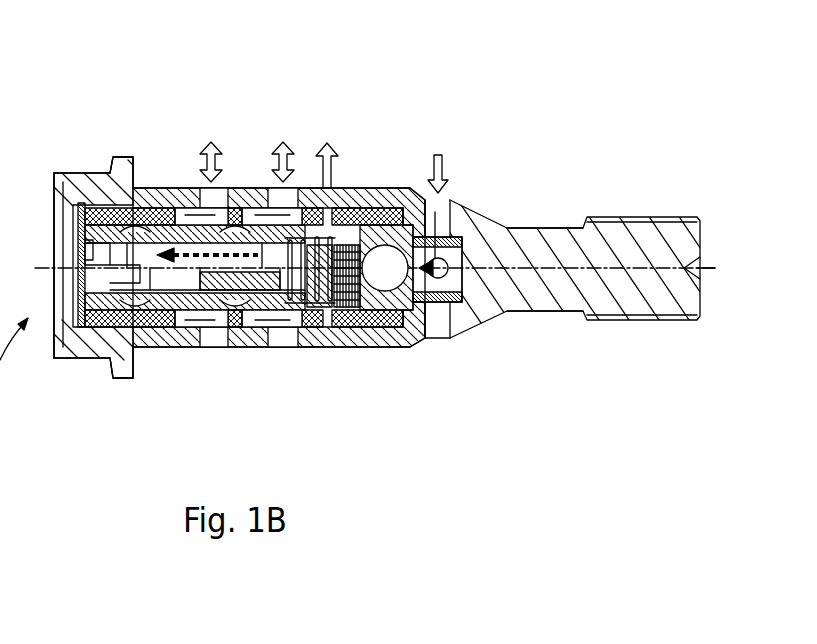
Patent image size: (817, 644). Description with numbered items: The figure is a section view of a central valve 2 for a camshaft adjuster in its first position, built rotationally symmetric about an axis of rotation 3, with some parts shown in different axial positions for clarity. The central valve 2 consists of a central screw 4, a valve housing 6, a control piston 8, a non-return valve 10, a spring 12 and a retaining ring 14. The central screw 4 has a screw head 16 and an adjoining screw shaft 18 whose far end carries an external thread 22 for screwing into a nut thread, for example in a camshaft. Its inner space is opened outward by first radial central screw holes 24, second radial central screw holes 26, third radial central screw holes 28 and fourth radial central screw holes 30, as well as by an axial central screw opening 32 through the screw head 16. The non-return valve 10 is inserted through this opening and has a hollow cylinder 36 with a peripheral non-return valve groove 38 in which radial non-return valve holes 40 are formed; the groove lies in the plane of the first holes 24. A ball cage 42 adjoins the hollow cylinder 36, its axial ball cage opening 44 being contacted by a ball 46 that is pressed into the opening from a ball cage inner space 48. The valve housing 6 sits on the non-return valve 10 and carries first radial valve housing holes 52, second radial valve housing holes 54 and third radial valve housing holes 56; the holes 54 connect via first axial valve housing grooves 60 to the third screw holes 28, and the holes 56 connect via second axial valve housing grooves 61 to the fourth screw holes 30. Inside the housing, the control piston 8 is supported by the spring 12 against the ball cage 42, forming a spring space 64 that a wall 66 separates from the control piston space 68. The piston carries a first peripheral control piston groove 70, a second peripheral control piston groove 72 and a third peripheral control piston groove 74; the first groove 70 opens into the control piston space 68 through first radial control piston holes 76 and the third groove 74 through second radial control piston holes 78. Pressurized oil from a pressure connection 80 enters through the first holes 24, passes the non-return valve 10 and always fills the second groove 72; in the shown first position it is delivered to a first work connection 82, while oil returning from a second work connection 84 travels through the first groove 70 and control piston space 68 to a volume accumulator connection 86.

The central valve 2 is at (657, 53).
The axis of rotation 3 is at (713, 268).
The central screw 4 is at (400, 347).
The valve housing 6 is at (128, 372).
The control piston 8 is at (245, 335).
The non-return valve 10 is at (397, 213).
The spring 12 is at (372, 298).
The retaining ring 14 is at (72, 186).
The screw head 16 is at (117, 158).
The screw shaft 18 is at (365, 205).
The external thread 22 is at (642, 217).
The first radial central screw holes 24 is at (455, 205).
The second radial central screw holes 26 is at (345, 222).
The third radial central screw holes 28 is at (278, 240).
The fourth radial central screw holes 30 is at (205, 222).
The axial central screw opening 32 is at (58, 250).
The hollow cylinder 36 is at (455, 237).
The non-return valve groove 38 is at (482, 312).
The radial non-return valve holes 40 is at (455, 240).
The ball cage 42 is at (440, 305).
The axial ball cage opening 44 is at (446, 345).
The ball 46 is at (435, 200).
The ball cage inner space 48 is at (420, 342).
The first radial valve housing holes 52 is at (300, 212).
The second radial valve housing holes 54 is at (228, 203).
The third radial valve housing holes 56 is at (183, 212).
The first axial valve housing grooves 60 is at (290, 330).
The second axial valve housing grooves 61 is at (205, 347).
The spring space 64 is at (388, 320).
The wall 66 is at (338, 330).
The control piston space 68 is at (163, 347).
The first peripheral control piston groove 70 is at (312, 318).
The second peripheral control piston groove 72 is at (272, 330).
The third peripheral control piston groove 74 is at (112, 360).
The first radial control piston holes 76 is at (120, 268).
The second radial control piston holes 78 is at (258, 222).
The pressure connection 80 is at (442, 140).
The first work connection 82 is at (222, 140).
The second work connection 84 is at (284, 140).
The volume accumulator connection 86 is at (330, 142).